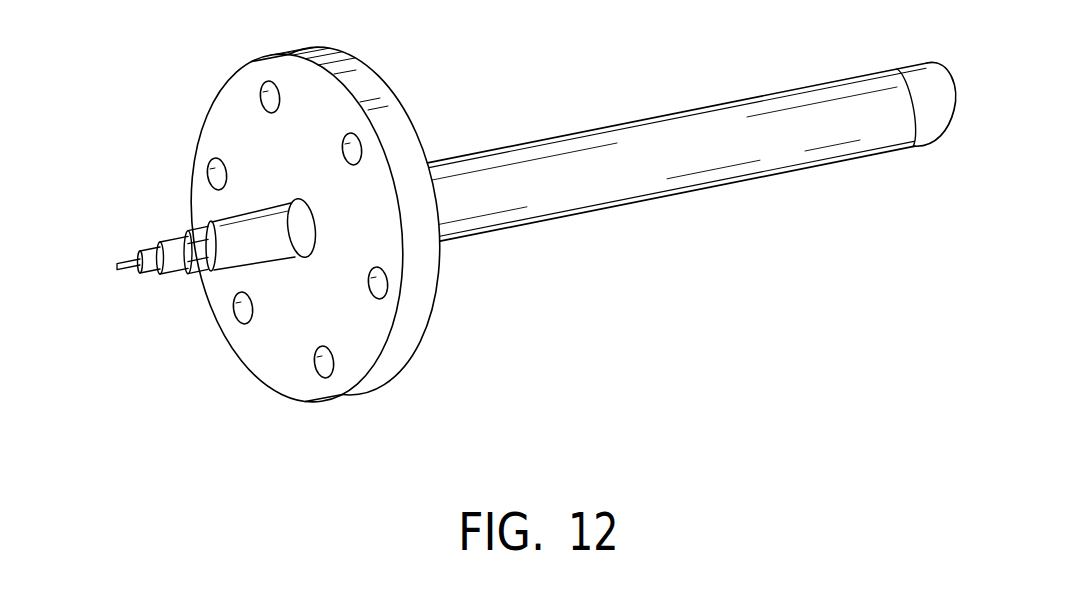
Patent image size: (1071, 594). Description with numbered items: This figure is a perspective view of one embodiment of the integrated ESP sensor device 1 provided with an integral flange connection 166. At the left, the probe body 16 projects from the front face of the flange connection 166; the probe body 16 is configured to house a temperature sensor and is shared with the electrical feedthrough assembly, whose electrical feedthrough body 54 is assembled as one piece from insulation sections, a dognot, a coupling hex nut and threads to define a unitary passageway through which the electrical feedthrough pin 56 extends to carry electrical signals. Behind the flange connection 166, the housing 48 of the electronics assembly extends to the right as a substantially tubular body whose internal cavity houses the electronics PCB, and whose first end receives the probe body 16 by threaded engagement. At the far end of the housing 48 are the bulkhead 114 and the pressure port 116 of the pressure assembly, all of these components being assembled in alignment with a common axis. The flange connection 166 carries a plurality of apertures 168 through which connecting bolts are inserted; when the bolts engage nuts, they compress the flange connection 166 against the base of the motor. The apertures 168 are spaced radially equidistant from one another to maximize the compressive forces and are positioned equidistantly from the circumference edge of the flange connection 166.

The device 1 is at (567, 54).
The probe body 16 is at (230, 252).
The housing 48 is at (626, 195).
The electrical feedthrough body 54 is at (165, 247).
The electrical feedthrough pin 56 is at (115, 263).
The bulkhead 114 is at (927, 135).
The pressure port 116 is at (953, 98).
The integral flange connection 166 is at (301, 50).
The apertures 168 is at (266, 99).